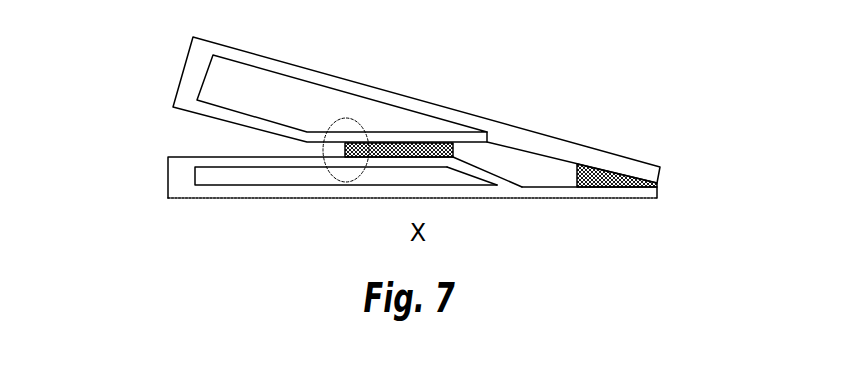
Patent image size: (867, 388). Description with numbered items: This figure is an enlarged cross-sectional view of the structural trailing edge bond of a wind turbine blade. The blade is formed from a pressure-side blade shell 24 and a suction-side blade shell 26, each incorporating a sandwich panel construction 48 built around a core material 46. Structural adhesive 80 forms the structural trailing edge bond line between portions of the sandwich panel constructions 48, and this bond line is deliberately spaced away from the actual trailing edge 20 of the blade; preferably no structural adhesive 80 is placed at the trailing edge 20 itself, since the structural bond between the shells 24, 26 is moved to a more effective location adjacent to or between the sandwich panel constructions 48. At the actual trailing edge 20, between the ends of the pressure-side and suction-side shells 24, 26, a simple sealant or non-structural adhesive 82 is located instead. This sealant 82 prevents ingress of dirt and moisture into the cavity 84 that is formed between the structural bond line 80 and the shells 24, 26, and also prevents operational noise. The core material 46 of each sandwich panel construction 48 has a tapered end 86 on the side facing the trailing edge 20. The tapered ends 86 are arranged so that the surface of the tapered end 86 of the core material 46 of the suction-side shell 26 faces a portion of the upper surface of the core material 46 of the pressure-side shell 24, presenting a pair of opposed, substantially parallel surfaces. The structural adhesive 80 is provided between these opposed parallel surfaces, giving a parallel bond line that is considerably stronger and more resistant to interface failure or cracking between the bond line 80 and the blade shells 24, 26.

The trailing edge 20 is at (673, 200).
The pressure-side blade shell 24 is at (555, 199).
The suction-side blade shell 26 is at (603, 148).
The core material 46 is at (168, 158).
The sandwich panel construction 48 is at (250, 147).
The structural adhesive 80 is at (390, 138).
The sealant 82 is at (660, 170).
The cavity 84 is at (530, 168).
The tapered end 86 is at (415, 128).